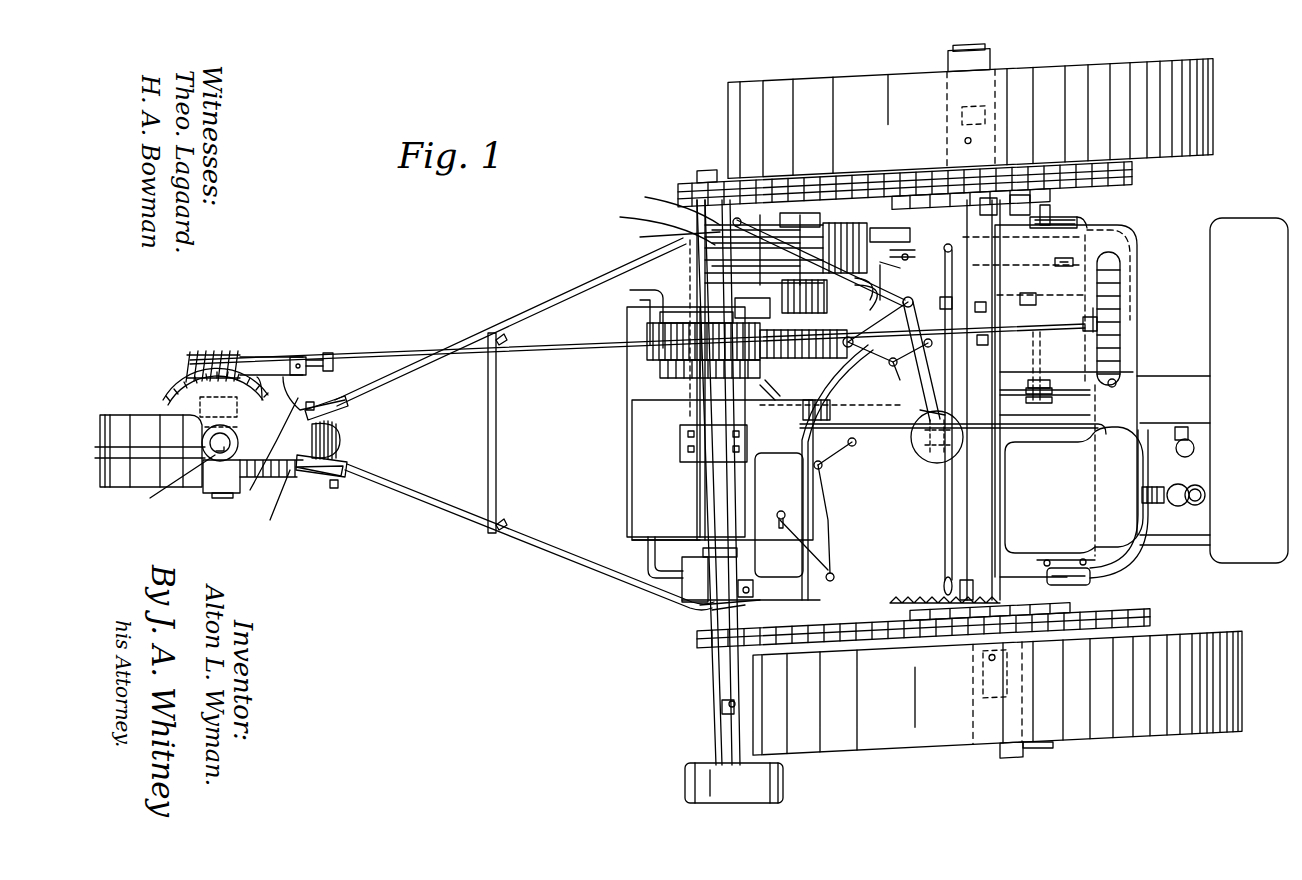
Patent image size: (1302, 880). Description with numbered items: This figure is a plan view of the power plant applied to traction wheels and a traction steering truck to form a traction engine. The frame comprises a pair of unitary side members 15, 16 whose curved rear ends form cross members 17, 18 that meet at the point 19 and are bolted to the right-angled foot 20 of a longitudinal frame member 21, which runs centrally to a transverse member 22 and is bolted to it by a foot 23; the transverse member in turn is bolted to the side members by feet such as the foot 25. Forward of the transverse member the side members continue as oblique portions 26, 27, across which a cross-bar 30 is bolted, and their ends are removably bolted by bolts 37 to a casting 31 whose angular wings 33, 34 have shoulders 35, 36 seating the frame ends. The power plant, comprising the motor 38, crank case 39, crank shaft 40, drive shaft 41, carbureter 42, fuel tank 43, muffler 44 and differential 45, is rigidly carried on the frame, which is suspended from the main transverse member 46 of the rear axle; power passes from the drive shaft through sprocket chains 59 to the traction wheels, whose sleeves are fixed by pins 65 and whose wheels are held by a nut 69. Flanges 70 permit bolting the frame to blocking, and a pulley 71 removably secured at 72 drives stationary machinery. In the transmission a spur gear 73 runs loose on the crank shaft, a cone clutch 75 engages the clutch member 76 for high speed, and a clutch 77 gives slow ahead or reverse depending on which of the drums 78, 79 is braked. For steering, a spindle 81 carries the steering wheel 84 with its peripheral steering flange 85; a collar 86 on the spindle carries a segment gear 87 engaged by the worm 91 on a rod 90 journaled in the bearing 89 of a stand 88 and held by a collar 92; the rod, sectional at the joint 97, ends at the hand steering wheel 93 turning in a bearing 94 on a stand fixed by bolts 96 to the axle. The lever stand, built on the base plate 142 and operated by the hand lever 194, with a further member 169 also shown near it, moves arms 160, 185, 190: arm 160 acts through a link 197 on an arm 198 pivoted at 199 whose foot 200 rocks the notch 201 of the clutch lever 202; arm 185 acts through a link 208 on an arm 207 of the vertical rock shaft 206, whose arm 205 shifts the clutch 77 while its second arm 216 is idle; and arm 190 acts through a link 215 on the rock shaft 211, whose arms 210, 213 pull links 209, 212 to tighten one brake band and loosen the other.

The side member 15 is at (738, 611).
The side member 16 is at (890, 236).
The cross member 17 is at (1195, 462).
The cross member 18 is at (1140, 338).
The meeting point 19 is at (1190, 375).
The right-angled foot 20 is at (1140, 372).
The longitudinal frame member 21 is at (1080, 400).
The transverse member 22 is at (700, 412).
The foot 23 is at (690, 400).
The right-angled foot 25 is at (663, 232).
The oblique portion 26 is at (518, 565).
The oblique portion 27 is at (523, 300).
The cross-bar 30 is at (486, 432).
The casting 31 is at (274, 511).
The wing 33 is at (350, 462).
The wing 34 is at (352, 410).
The shoulder 35 is at (305, 478).
The shoulder 36 is at (265, 475).
The bolt 37 is at (310, 402).
The motor 38 is at (1074, 470).
The crank case 39 is at (885, 600).
The crank shaft 40 is at (842, 445).
The drive shaft 41 is at (712, 612).
The carbureter 42 is at (1205, 502).
The fuel tank 43 is at (1212, 296).
The muffler 44 is at (626, 445).
The differential 45 is at (645, 330).
The main transverse member 46 is at (1005, 532).
The sprocket chain 59 is at (850, 226).
The pin 65 is at (968, 186).
The nut 69 is at (1030, 758).
The flange 70 is at (1100, 580).
The pulley 71 is at (683, 783).
The removable securing means 72 is at (720, 714).
The spur gear 73 is at (870, 294).
The clutch 75 is at (700, 378).
The clutch member 76 is at (760, 390).
The clutch 77 is at (782, 296).
The drum 78 is at (902, 247).
The drum 79 is at (885, 255).
The spindle 81 is at (180, 489).
The steering wheel 84 is at (112, 440).
The peripheral steering flange 85 is at (135, 470).
The collar 86 is at (216, 470).
The segment gear 87 is at (175, 395).
The stand 88 is at (312, 356).
The bearing 89 is at (258, 356).
The rod 90 is at (370, 352).
The worm 91 is at (205, 350).
The collar 92 is at (296, 355).
The steering wheel 93 is at (1125, 300).
The bearing 94 is at (1000, 320).
The bolt 96 is at (978, 300).
The bolt or universal joint 97 is at (330, 352).
The base plate 142 is at (930, 460).
The arm 160 is at (880, 440).
The rod 169 is at (955, 470).
The arm 185 is at (1065, 367).
The arm 190 is at (937, 309).
The hand lever 194 is at (998, 440).
The link 197 is at (846, 519).
The arm 198 is at (700, 512).
The pivot 199 is at (834, 525).
The foot 200 is at (705, 600).
The notch 201 is at (700, 530).
The clutch lever 202 is at (755, 480).
The arm 205 is at (870, 300).
The rock shaft 206 is at (876, 324).
The arm 207 is at (890, 349).
The link 208 is at (911, 369).
The link 209 is at (819, 256).
The arm 210 is at (645, 225).
The rock shaft 211 is at (659, 204).
The link 212 is at (660, 292).
The arm 213 is at (700, 265).
The link 215 is at (838, 245).
The arm 216 is at (886, 280).